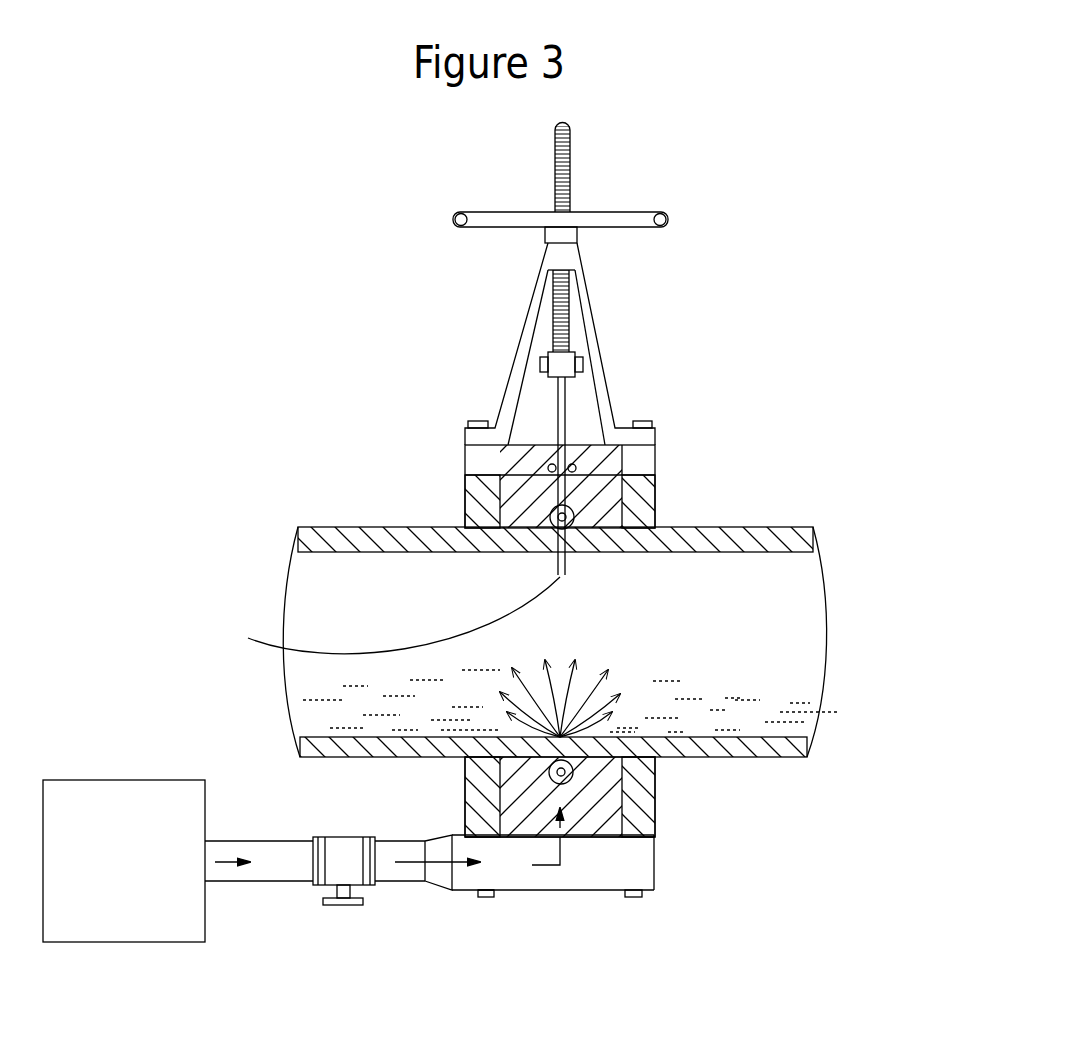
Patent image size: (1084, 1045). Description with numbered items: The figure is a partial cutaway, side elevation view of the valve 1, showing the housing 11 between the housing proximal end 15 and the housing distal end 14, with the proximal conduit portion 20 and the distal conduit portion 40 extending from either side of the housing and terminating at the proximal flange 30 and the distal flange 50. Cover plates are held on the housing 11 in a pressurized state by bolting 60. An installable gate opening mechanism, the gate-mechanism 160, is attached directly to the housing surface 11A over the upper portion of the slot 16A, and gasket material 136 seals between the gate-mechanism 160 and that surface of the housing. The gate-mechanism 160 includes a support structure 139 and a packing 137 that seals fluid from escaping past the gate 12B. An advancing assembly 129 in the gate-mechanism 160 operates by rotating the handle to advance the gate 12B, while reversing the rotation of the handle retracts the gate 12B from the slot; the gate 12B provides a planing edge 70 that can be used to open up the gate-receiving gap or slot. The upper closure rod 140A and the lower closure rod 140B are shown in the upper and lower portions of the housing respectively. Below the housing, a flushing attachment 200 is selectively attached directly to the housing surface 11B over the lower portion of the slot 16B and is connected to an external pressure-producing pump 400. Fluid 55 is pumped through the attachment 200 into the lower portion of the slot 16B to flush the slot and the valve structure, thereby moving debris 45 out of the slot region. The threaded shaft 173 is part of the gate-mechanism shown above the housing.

The valve 1 is at (145, 487).
The advancing assembly 129 is at (635, 218).
The threaded shaft 173 is at (558, 238).
The gate-mechanism 160 is at (600, 338).
The support structure 139 is at (615, 407).
The packing 137 is at (546, 462).
The housing 11 is at (467, 450).
The gasket material 136 is at (470, 477).
The upper portion of the slot 16A is at (470, 525).
The housing surface 11A is at (610, 463).
The upper closure rod 140A is at (620, 488).
The gate 12B is at (655, 512).
The distal conduit portion 40 is at (323, 552).
The proximal conduit portion 20 is at (760, 552).
The housing distal end 14 is at (300, 527).
The housing proximal end 15 is at (813, 532).
The gate planing edge 70 is at (375, 615).
The debris 45 is at (773, 710).
The distal flange 50 is at (465, 800).
The lower closure rod 140B is at (655, 790).
The lower portion of the slot 16B is at (645, 825).
The proximal flange 30 is at (645, 830).
The flushing attachment 200 is at (654, 872).
The housing surface 11B is at (602, 837).
The bolting 60 is at (482, 892).
The fluid 55 is at (310, 860).
The external pressure-producing pump 400 is at (215, 862).